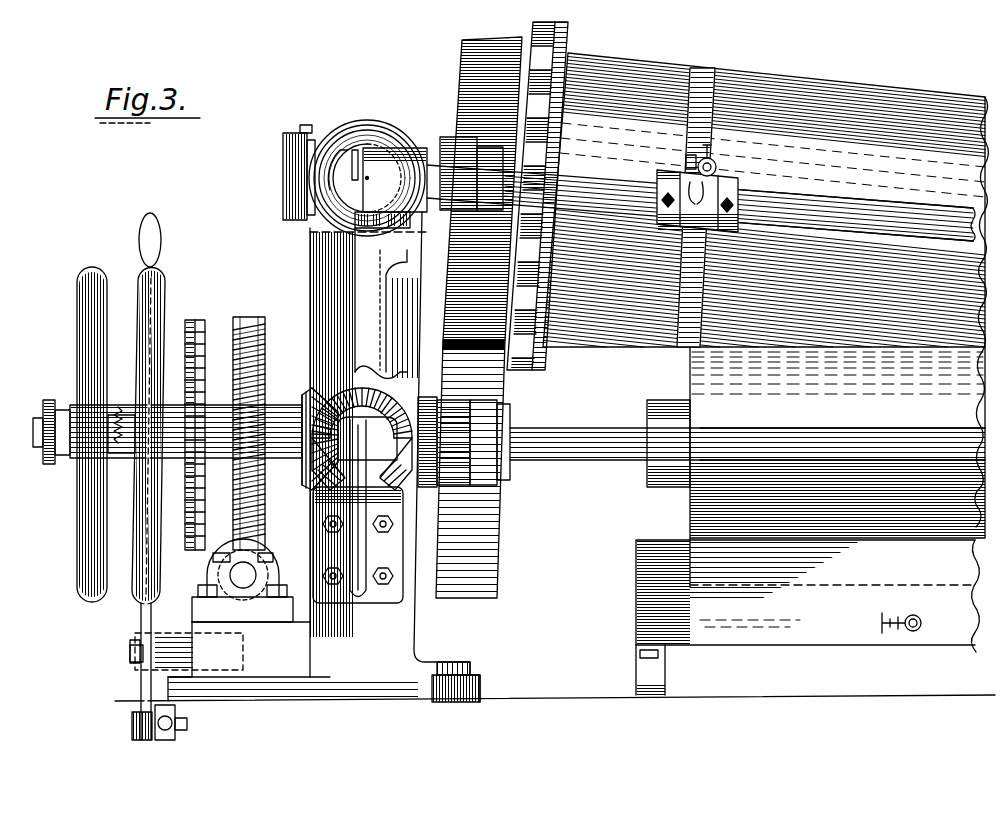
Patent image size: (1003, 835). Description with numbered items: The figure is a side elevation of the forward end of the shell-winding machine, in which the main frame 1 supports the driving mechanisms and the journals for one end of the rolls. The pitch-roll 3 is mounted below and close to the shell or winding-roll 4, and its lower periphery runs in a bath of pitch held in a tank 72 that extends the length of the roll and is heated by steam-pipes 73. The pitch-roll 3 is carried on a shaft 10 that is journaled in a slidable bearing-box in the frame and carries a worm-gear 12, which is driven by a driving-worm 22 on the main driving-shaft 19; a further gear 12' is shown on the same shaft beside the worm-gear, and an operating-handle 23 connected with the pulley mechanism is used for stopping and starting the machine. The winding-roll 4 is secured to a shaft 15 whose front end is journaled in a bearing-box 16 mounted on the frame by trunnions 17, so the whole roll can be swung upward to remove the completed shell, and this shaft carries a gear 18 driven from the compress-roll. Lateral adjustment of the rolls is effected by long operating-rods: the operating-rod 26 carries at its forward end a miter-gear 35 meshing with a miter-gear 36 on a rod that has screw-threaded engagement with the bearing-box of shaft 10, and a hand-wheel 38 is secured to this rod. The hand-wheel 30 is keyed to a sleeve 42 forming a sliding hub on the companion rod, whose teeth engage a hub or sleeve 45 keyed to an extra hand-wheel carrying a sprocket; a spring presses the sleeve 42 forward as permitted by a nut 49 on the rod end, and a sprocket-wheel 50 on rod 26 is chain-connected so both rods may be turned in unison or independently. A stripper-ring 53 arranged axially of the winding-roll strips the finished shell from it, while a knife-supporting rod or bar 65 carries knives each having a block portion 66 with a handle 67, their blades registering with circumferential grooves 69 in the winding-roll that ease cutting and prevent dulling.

The main frame 1 is at (315, 247).
The pitch-roll 3 is at (837, 467).
The shell or winding-roll 4 is at (852, 180).
The shaft 10 is at (612, 412).
The worm-gear 12 is at (249, 420).
The gear 12' is at (470, 490).
The shaft 15 is at (527, 156).
The bearing-box 16 is at (372, 122).
The trunnions 17 is at (347, 188).
The gear 18 is at (462, 60).
The main driving-shaft 19 is at (248, 575).
The driving-worm 22 is at (205, 577).
The operating-handle 23 is at (140, 230).
The operating-rod 26 is at (610, 462).
The hand-wheel 30 is at (80, 288).
The miter-gear 35 is at (308, 495).
The miter-gear 36 is at (330, 377).
The hand-wheel 38 is at (147, 317).
The sleeve 42 is at (111, 410).
The hub or sleeve 45 is at (123, 467).
The nut 49 is at (44, 404).
The sprocket-wheel 50 is at (192, 320).
The stripper-ring 53 is at (620, 70).
The knife-supporting rod or bar 65 is at (904, 208).
The block portion 66 is at (680, 183).
The handle 67 is at (716, 169).
The circumferential grooves 69 is at (712, 150).
The tank 72 is at (634, 595).
The steam-pipes 73 is at (912, 632).